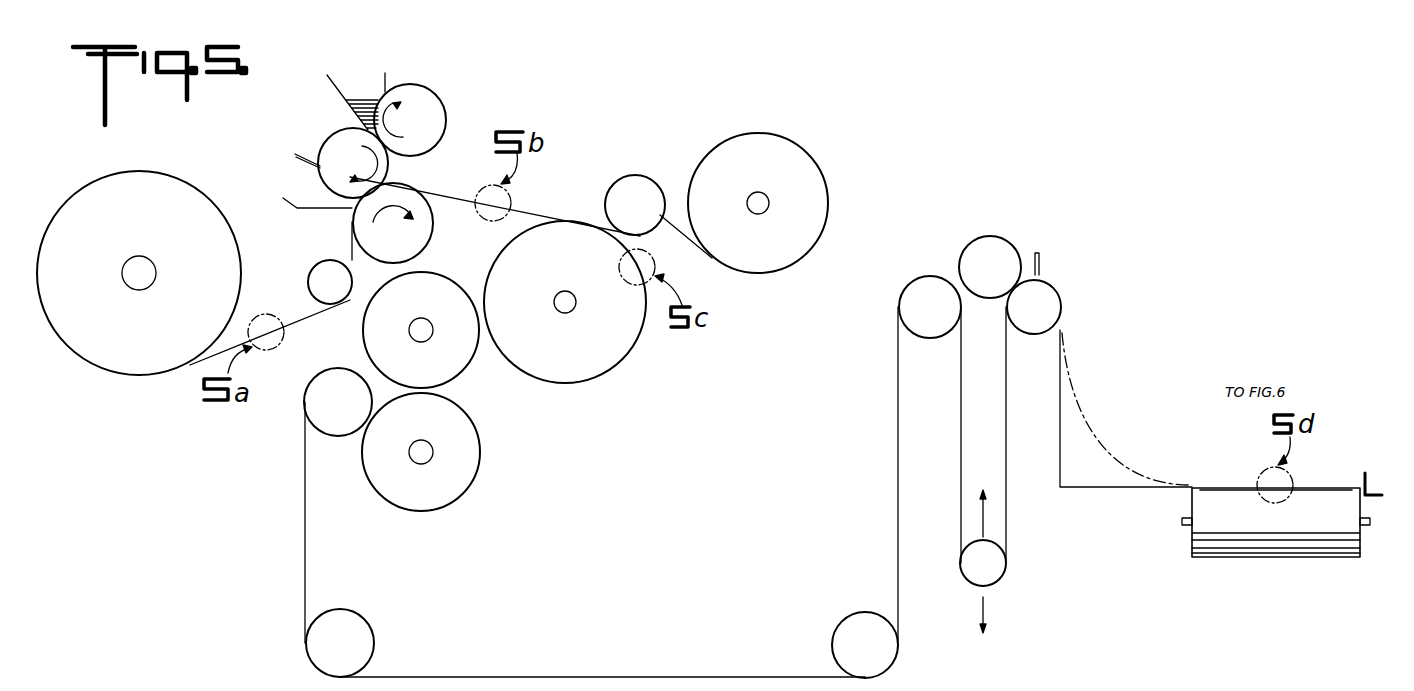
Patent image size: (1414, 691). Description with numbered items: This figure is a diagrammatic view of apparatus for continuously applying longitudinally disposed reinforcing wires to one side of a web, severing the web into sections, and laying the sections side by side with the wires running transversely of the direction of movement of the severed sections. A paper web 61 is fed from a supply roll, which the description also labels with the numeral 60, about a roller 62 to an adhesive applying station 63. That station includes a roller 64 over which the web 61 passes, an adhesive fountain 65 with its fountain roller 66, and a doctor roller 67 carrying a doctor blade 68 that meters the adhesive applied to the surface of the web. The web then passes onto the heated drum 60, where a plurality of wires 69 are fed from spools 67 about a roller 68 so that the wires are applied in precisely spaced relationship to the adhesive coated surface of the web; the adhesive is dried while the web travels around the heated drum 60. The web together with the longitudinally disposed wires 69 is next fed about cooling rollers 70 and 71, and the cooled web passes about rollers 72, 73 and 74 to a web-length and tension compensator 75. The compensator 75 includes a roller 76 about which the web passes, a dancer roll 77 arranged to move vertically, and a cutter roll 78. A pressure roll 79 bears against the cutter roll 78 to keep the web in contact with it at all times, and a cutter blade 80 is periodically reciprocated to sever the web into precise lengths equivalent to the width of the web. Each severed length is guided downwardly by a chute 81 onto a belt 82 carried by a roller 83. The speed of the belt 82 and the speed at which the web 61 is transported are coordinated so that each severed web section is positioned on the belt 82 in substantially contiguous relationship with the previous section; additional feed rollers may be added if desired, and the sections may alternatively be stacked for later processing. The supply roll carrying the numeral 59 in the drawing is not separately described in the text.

The supply roll of web material 59 is at (140, 178).
The heated drum 60 is at (578, 363).
The paper web 61 is at (300, 323).
The roller 62 is at (331, 262).
The adhesive applying station 63 is at (316, 139).
The roller 64 is at (422, 210).
The adhesive fountain 65 is at (360, 100).
The fountain roller 66 is at (417, 97).
The doctor roller / spools 67 is at (333, 137).
The doctor blade / roller 68 is at (295, 158).
The wires 69 is at (675, 203).
The cooling roller 70 is at (437, 288).
The cooling roller 71 is at (462, 433).
The roller 72 is at (333, 373).
The roller 73 is at (340, 620).
The roller 74 is at (853, 617).
The web-length and tension compensator 75 is at (962, 233).
The roller 76 is at (920, 280).
The dancer roll 77 is at (993, 567).
The cutter roll 78 is at (1060, 288).
The pressure roll 79 is at (995, 240).
The cutter blade 80 is at (1040, 257).
The chute 81 is at (1085, 407).
The belt 82 is at (1317, 483).
The roller 83 is at (1272, 533).